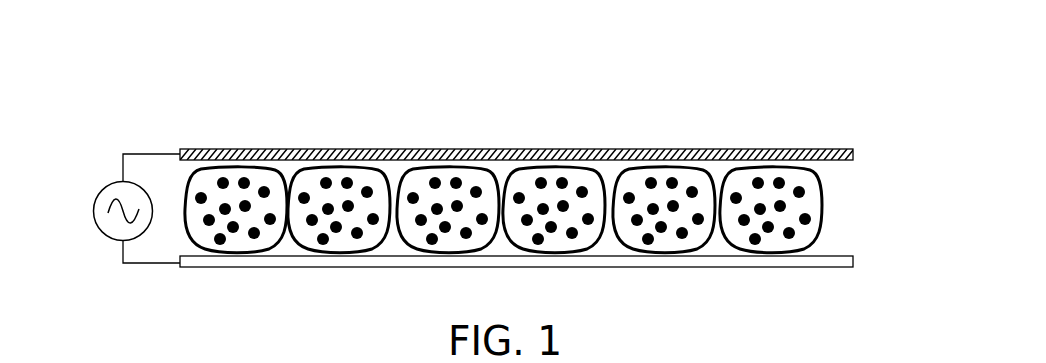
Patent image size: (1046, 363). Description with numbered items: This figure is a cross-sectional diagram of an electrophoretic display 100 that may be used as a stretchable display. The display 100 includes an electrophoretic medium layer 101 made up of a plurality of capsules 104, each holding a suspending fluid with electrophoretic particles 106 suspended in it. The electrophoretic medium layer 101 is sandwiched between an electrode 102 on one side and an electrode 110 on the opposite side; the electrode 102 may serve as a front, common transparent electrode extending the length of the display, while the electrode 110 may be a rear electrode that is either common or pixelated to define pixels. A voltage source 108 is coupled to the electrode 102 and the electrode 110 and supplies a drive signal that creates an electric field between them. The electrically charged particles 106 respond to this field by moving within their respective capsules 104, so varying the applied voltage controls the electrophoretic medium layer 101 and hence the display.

The display 100 is at (218, 121).
The electrophoretic medium layer 101 is at (885, 163).
The electrode 102 is at (852, 160).
The capsule 104 is at (822, 200).
The electrophoretic particle 106 is at (792, 237).
The voltage source 108 is at (102, 200).
The electrode 110 is at (823, 268).